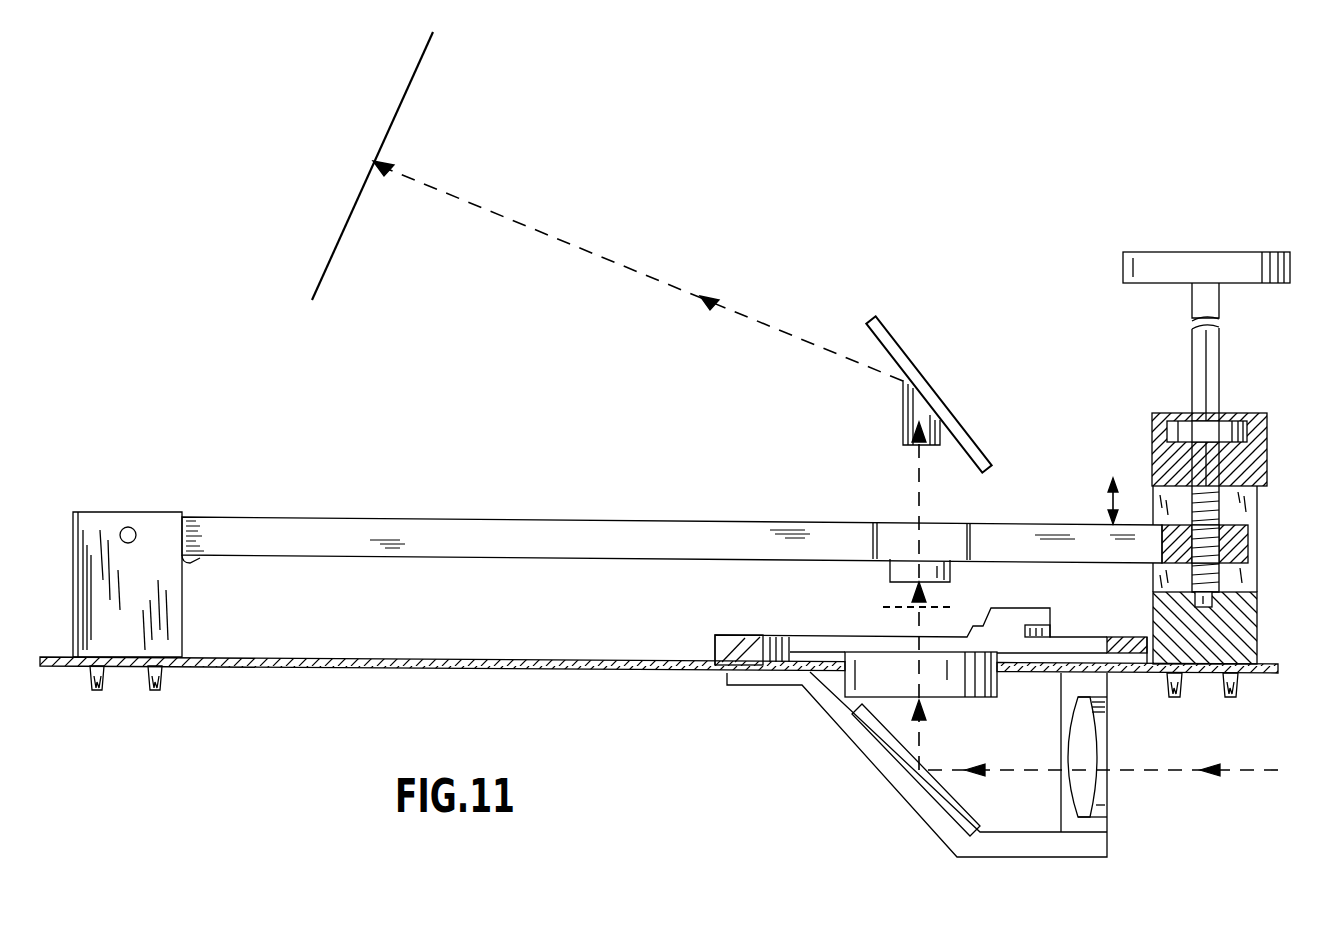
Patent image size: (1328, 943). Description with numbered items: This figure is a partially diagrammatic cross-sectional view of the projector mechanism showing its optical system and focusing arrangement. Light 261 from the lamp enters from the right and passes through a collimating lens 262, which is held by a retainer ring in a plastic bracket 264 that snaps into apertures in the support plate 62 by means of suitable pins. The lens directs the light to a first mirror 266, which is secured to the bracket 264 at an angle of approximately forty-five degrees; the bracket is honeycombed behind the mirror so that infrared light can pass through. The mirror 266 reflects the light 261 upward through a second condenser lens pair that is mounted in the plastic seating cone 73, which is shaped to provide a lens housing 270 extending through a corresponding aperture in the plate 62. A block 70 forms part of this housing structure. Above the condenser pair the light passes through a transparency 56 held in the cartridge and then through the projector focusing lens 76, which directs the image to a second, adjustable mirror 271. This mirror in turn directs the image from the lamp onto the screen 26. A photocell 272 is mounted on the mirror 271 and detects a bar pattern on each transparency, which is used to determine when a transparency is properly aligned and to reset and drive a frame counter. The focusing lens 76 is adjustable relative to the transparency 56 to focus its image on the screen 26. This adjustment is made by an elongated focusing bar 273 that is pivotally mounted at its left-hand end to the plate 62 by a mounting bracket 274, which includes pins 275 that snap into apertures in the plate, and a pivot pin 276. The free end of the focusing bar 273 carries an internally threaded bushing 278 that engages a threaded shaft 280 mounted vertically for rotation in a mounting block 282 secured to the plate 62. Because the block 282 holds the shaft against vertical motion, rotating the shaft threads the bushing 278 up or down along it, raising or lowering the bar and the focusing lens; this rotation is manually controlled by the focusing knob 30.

The screen 26 is at (418, 69).
The focusing knob 30 is at (1258, 265).
The transparency 56 is at (948, 608).
The support plate 62 is at (534, 668).
The housing block 70 is at (1028, 615).
The plastic seating cone 73 is at (1095, 640).
The projector focusing lens 76 is at (902, 562).
The light 261 is at (1230, 768).
The collimating lens 262 is at (1088, 787).
The bracket 264 is at (1052, 848).
The first mirror 266 is at (885, 737).
The lens housing 270 is at (955, 687).
The adjustable mirror 271 is at (890, 343).
The photocell 272 is at (910, 412).
The focusing bar 273 is at (465, 522).
The mounting bracket 274 is at (92, 510).
The pins 275 is at (108, 686).
The pivot pin 276 is at (131, 527).
The internally threaded bushing 278 is at (1248, 545).
The threaded shaft 280 is at (1213, 368).
The mounting block 282 is at (1152, 448).